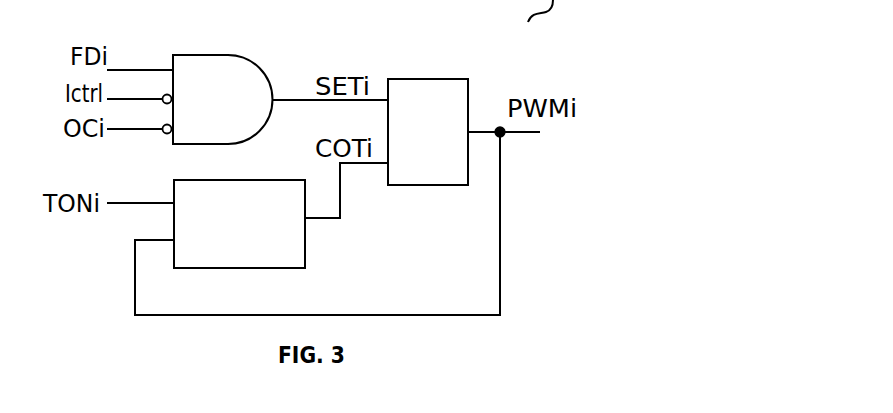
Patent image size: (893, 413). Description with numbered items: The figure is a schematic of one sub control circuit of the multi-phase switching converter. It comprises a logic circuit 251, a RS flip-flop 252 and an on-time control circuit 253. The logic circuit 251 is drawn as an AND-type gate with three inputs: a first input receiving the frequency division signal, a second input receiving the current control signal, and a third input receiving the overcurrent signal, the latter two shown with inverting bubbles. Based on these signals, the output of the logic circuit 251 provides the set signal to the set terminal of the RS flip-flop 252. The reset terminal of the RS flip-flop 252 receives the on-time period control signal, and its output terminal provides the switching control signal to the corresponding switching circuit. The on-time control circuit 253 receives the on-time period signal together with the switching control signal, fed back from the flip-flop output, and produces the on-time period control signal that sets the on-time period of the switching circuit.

The logic circuit 251 is at (197, 55).
The RS flip-flop 252 is at (415, 79).
The on-time control circuit 253 is at (222, 268).